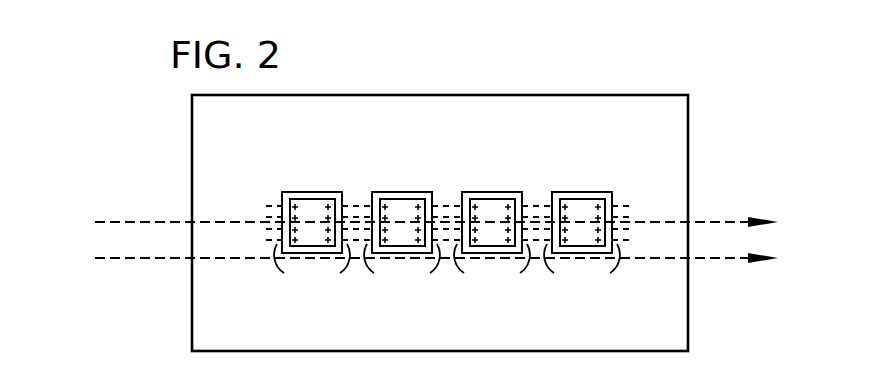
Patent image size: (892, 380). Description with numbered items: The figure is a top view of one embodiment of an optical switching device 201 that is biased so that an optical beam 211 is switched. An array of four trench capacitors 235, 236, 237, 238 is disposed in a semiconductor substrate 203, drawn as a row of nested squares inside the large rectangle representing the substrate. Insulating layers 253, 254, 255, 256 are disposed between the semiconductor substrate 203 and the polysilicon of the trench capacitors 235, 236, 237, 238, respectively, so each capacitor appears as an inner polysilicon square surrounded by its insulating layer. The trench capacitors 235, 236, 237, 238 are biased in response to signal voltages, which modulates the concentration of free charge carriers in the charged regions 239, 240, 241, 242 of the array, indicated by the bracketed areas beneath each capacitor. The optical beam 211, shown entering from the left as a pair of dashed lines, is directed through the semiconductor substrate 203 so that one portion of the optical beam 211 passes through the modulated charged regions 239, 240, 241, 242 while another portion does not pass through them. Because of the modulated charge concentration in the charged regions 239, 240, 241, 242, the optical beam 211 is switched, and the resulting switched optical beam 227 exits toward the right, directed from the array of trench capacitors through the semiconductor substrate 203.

The optical switching device 201 is at (425, 71).
The semiconductor substrate 203 is at (507, 104).
The optical beam 211 is at (92, 200).
The switched optical beam 227 is at (788, 197).
The trench capacitor 235 is at (298, 199).
The trench capacitor 236 is at (389, 198).
The trench capacitor 237 is at (478, 198).
The trench capacitor 238 is at (573, 197).
The charged region 239 is at (312, 264).
The charged region 240 is at (402, 264).
The charged region 241 is at (492, 264).
The charged region 242 is at (582, 264).
The insulating layer 253 is at (315, 192).
The insulating layer 254 is at (409, 192).
The insulating layer 255 is at (497, 192).
The insulating layer 256 is at (592, 197).